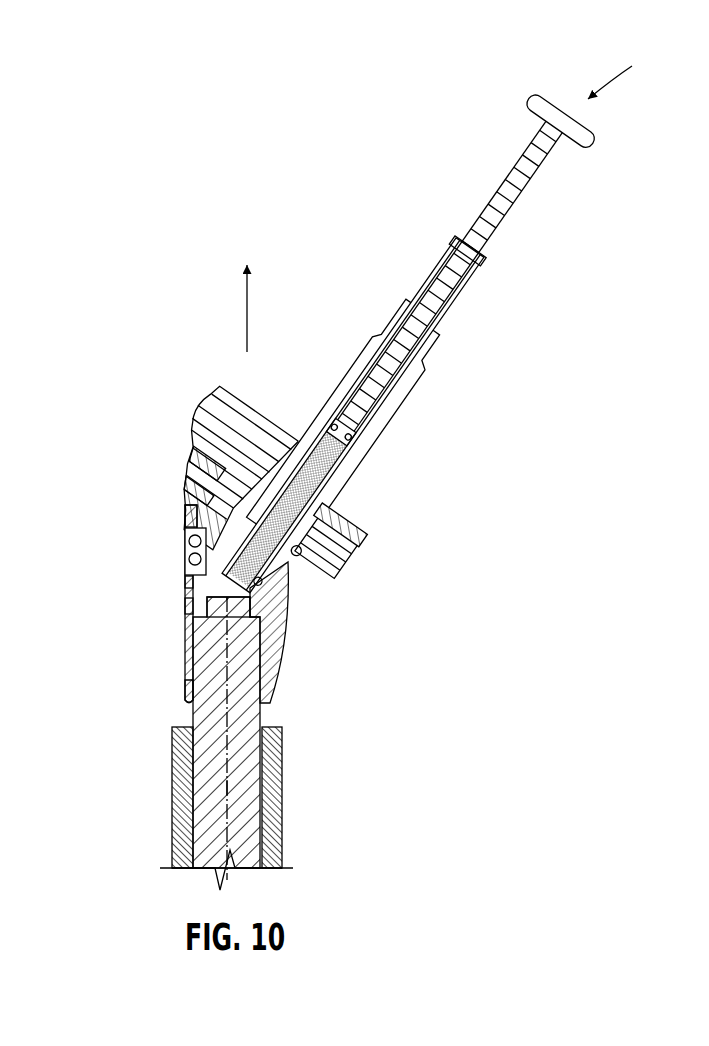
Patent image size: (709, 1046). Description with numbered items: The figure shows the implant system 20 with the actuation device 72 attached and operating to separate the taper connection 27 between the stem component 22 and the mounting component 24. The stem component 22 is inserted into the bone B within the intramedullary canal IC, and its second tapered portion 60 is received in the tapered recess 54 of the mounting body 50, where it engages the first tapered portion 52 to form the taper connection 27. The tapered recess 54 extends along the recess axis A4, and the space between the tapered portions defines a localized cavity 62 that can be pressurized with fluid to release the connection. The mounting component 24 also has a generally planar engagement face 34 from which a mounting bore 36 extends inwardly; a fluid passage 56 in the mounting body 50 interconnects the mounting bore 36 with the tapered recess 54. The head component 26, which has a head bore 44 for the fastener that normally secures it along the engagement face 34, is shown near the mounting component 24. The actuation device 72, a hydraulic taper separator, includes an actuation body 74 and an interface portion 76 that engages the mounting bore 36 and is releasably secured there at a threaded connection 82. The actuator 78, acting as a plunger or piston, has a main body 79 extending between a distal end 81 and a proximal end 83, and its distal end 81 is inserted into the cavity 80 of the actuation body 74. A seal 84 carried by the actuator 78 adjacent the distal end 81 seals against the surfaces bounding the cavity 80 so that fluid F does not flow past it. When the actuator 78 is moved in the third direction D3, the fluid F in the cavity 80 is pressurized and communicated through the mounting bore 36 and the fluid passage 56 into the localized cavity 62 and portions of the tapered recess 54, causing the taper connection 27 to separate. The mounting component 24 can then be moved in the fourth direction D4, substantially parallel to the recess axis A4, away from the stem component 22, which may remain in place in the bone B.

The implant system 20 is at (357, 162).
The stem component 22 is at (175, 823).
The mounting component 24 is at (182, 498).
The head component 26 is at (182, 408).
The taper connection 27 is at (187, 665).
The first engagement face 34 is at (262, 580).
The mounting bore 36 is at (283, 590).
The head bore 44 is at (303, 550).
The mounting body 50 is at (185, 517).
The first tapered portion 52 is at (187, 690).
The tapered recess 54 is at (241, 706).
The fluid passage 56 is at (190, 586).
The second tapered portion 60 is at (245, 658).
The localized cavity 62 is at (190, 607).
The actuation device 72 is at (447, 240).
The actuation body 74 is at (364, 350).
The interface portion 76 is at (185, 563).
The actuator 78 is at (536, 192).
The main body 79 is at (484, 258).
The cavity 80 is at (388, 463).
The distal end 81 is at (322, 445).
The threaded connection 82 is at (189, 548).
The proximal end 83 is at (594, 136).
The seal 84 is at (350, 437).
The fluid F is at (312, 480).
The bone B is at (171, 746).
The recess axis A4 is at (265, 795).
The intramedullary canal IC is at (262, 792).
The third direction D3 is at (630, 70).
The fourth direction D4 is at (250, 318).